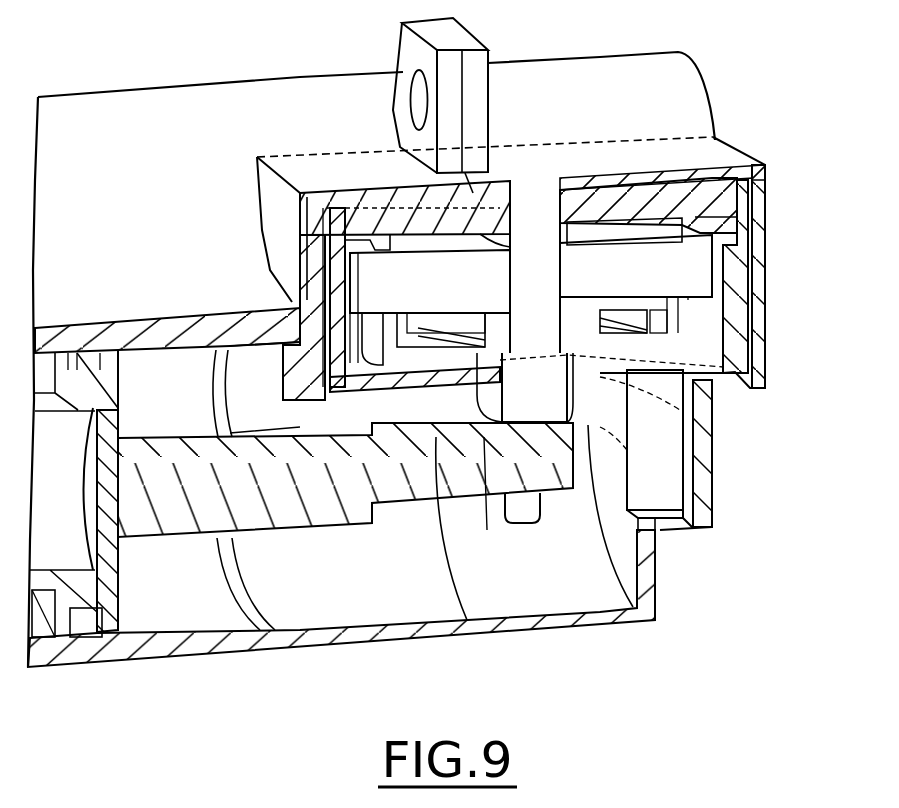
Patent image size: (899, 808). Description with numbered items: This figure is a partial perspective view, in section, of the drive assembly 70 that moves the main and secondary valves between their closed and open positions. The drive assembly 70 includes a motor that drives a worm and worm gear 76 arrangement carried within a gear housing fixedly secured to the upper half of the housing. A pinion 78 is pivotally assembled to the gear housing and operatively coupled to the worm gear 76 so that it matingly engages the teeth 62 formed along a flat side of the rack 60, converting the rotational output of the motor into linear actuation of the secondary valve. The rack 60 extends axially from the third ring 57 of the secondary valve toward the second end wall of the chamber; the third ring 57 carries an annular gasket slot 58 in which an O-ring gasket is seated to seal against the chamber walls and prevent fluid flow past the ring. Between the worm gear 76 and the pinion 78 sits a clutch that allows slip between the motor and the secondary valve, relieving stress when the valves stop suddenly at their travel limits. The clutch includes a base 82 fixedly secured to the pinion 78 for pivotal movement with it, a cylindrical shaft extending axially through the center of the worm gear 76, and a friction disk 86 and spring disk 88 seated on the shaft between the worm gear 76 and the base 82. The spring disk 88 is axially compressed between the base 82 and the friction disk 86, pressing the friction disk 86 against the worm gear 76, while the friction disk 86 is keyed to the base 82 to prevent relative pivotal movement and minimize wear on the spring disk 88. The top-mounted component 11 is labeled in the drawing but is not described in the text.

The drive assembly 70 is at (757, 118).
The cover 11 is at (715, 137).
The worm gear 76 is at (733, 245).
The friction disk 86 is at (667, 302).
The spring disk 88 is at (728, 352).
The base 82 is at (683, 417).
The pinion 78 is at (662, 463).
The rack 60 is at (288, 515).
The teeth 62 is at (485, 490).
The gasket slot 58 is at (83, 628).
The third ring 57 is at (58, 628).